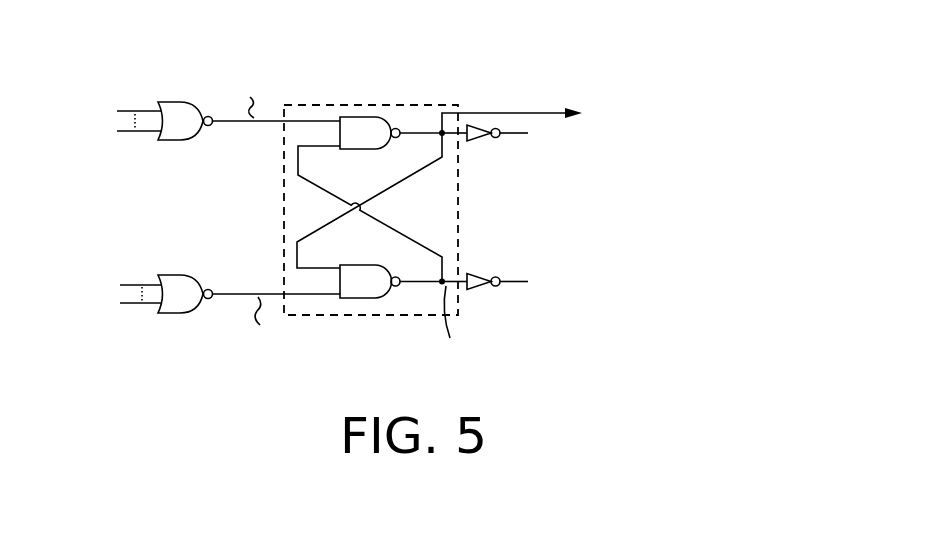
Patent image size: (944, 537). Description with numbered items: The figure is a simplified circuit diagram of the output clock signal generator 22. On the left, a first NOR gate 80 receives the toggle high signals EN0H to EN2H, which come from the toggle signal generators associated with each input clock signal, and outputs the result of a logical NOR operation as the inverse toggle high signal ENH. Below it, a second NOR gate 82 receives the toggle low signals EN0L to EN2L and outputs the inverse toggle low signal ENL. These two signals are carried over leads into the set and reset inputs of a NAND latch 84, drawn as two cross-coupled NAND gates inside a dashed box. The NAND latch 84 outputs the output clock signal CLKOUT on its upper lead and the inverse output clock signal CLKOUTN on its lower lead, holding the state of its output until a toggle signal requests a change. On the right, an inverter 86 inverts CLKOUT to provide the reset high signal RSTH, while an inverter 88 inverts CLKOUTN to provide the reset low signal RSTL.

The output clock signal generator 22 is at (613, 80).
The first NOR gate 80 is at (188, 131).
The second NOR gate 82 is at (188, 304).
The NAND latch 84 is at (411, 104).
The inverter 86 is at (482, 143).
The inverter 88 is at (482, 273).